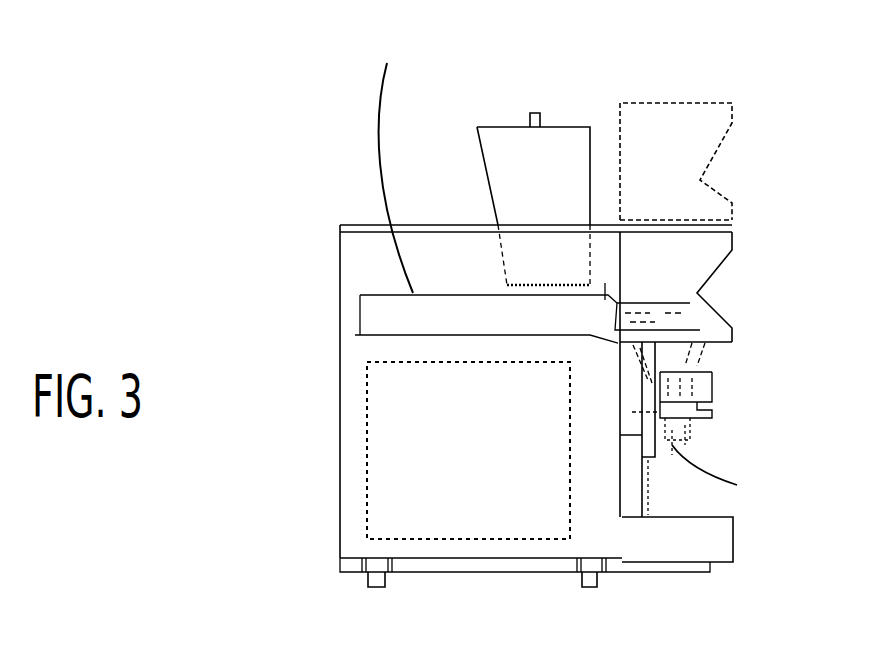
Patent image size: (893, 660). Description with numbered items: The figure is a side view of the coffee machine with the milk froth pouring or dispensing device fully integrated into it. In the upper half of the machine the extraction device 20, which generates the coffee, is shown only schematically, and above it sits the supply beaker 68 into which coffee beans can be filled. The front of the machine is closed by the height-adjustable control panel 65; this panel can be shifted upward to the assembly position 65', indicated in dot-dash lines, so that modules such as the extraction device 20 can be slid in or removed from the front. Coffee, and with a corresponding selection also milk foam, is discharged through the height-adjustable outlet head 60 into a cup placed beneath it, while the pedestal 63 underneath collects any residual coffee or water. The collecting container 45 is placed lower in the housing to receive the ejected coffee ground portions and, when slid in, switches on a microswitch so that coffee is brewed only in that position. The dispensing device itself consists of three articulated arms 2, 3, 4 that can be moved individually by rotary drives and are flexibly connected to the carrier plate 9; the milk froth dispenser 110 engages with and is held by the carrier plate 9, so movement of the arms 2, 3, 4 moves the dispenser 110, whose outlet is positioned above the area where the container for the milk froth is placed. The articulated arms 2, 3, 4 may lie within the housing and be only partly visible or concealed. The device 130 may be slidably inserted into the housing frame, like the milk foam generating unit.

The extraction device 20 is at (364, 459).
The supply beaker 68 is at (492, 165).
The assembly position of control panel 65' is at (692, 161).
The control panel 65 is at (686, 287).
The collecting container 45 is at (640, 482).
The articulated arm 4 is at (642, 372).
The articulated arm 2 is at (660, 364).
The articulated arm 3 is at (685, 372).
The outlet head 60 is at (690, 388).
The carrier plate 9 is at (695, 428).
The milk froth dispenser 110 is at (731, 474).
The pedestal 63 is at (690, 555).
The device 130 is at (384, 161).